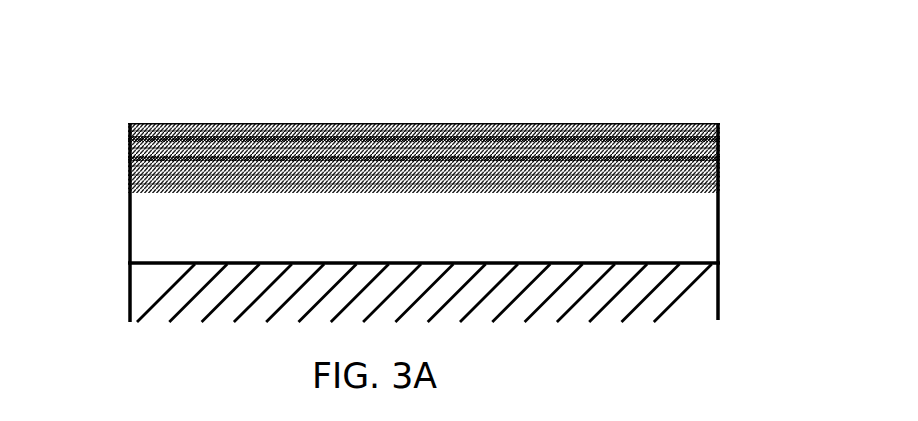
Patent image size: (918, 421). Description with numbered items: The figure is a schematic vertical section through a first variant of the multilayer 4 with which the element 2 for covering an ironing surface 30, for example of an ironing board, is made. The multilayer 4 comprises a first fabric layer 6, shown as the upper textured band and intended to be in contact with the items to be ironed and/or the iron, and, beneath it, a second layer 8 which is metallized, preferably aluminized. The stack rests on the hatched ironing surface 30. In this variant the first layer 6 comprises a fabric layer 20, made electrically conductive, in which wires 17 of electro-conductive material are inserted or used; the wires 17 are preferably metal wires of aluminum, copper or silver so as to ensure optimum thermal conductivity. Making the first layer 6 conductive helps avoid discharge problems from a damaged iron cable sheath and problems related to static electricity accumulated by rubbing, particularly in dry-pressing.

The element 2 is at (412, 191).
The multilayer 4 is at (407, 180).
The first fabric layer 6 is at (448, 115).
The second layer 8 is at (705, 216).
The wires 17 is at (305, 165).
The fabric layer 20 is at (208, 123).
The ironing surface 30 is at (697, 303).